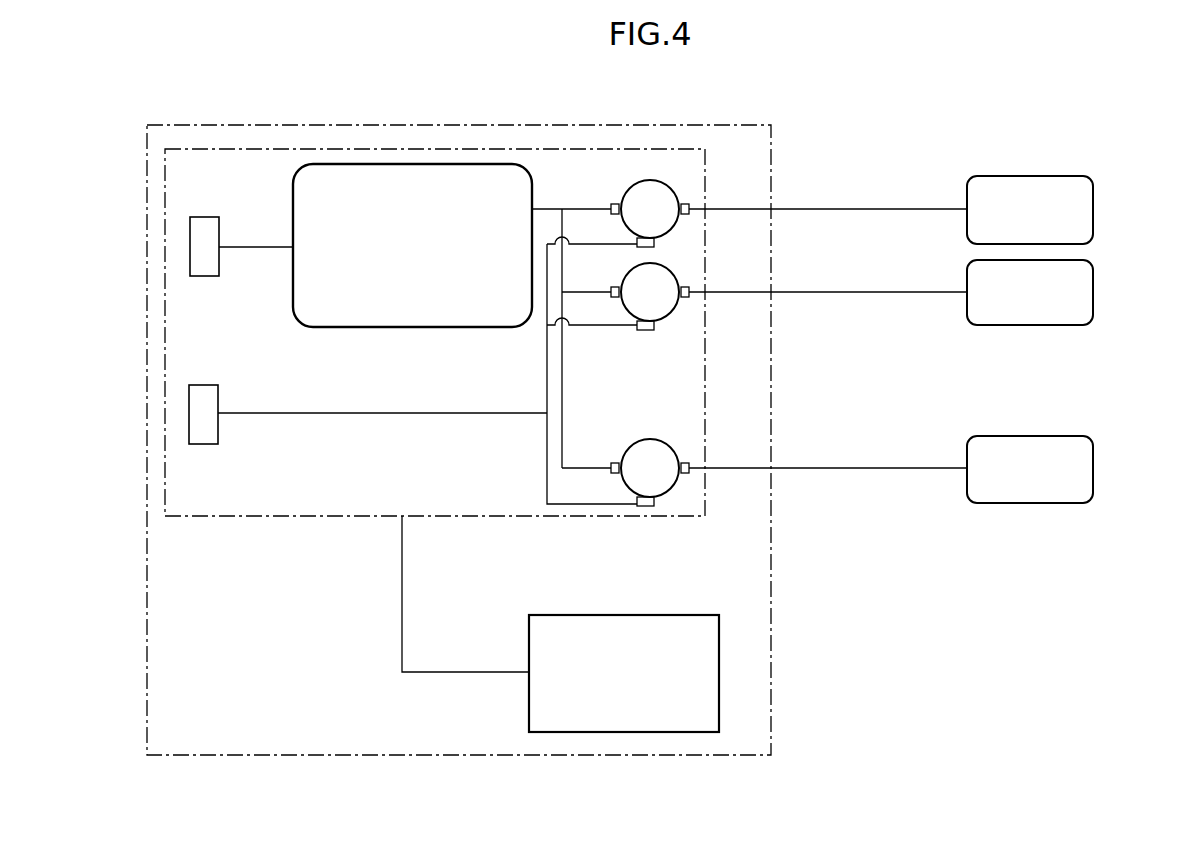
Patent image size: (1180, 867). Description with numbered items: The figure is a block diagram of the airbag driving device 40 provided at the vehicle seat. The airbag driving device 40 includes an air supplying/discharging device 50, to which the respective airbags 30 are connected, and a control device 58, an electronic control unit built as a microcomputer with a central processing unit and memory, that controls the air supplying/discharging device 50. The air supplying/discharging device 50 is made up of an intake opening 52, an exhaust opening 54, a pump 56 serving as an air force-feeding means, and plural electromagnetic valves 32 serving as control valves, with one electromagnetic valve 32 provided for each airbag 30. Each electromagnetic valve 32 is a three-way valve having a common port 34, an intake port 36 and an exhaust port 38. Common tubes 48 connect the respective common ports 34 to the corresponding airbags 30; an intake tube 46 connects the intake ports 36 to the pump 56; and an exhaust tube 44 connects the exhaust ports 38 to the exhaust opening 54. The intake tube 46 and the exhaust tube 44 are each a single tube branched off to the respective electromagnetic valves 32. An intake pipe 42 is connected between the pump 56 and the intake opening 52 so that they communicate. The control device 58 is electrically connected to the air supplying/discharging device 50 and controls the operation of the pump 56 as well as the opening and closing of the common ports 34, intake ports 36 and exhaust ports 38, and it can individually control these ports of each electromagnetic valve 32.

The airbag 30 is at (1095, 210).
The electromagnetic valve 32 is at (659, 176).
The common port 34 is at (689, 205).
The intake port 36 is at (614, 214).
The exhaust port 38 is at (654, 241).
The airbag driving device 40 is at (303, 756).
The intake pipe 42 is at (250, 249).
The exhaust tube 44 is at (370, 414).
The intake tube 46 is at (545, 207).
The common tube 48 is at (850, 209).
The air supplying/discharging device 50 is at (267, 518).
The intake opening 52 is at (216, 217).
The exhaust opening 54 is at (214, 385).
The pump 56 is at (372, 329).
The control device 58 is at (624, 733).